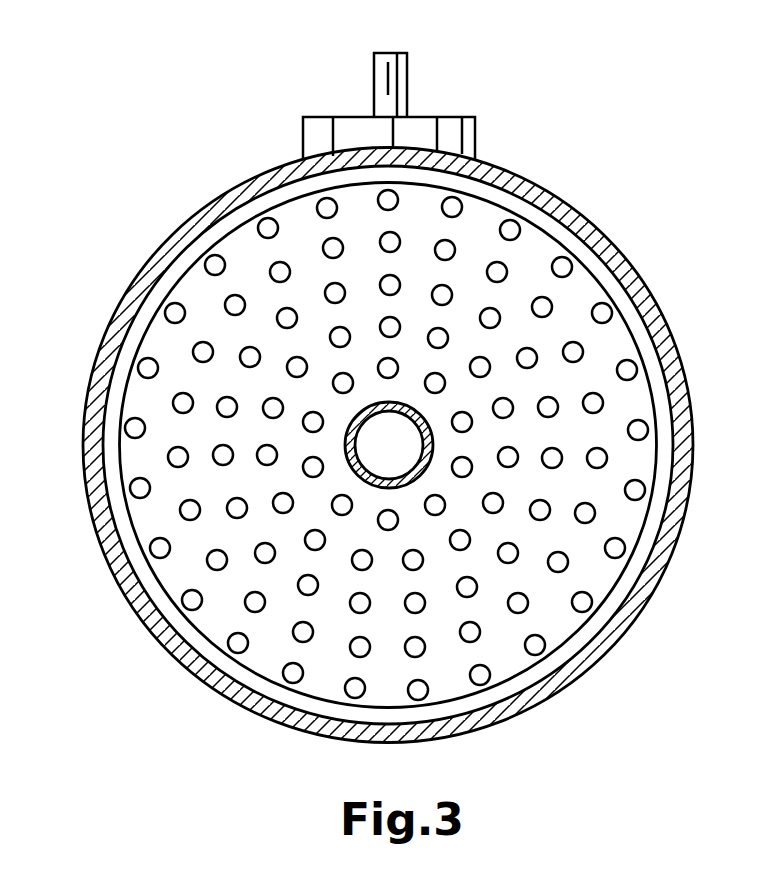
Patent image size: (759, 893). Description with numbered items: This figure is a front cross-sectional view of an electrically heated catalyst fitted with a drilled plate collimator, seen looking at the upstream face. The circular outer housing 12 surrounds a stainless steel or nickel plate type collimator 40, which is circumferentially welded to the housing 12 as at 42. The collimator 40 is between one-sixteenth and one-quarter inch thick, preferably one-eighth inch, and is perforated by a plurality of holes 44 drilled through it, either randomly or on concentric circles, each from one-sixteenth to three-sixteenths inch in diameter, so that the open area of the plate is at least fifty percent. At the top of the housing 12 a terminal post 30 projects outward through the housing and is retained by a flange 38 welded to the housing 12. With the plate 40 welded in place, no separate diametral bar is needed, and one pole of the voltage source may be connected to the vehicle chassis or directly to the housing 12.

The housing 12 is at (572, 212).
The terminal post 30 is at (392, 83).
The flange 38 is at (455, 135).
The plate type collimator 40 is at (577, 300).
The circumferential weld 42 is at (638, 330).
The holes 44 is at (340, 337).